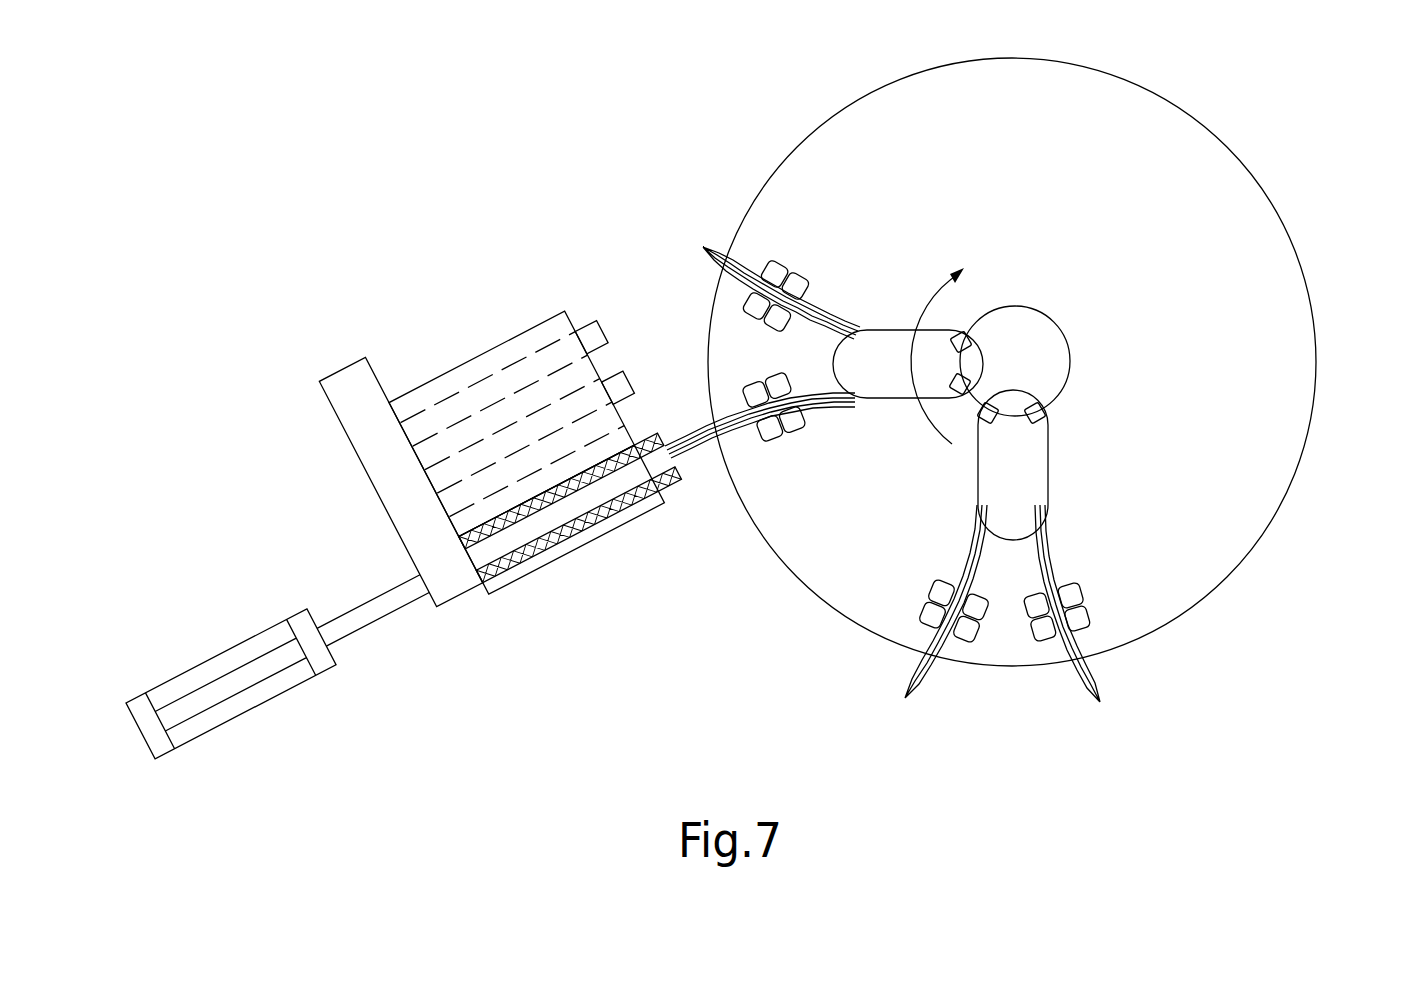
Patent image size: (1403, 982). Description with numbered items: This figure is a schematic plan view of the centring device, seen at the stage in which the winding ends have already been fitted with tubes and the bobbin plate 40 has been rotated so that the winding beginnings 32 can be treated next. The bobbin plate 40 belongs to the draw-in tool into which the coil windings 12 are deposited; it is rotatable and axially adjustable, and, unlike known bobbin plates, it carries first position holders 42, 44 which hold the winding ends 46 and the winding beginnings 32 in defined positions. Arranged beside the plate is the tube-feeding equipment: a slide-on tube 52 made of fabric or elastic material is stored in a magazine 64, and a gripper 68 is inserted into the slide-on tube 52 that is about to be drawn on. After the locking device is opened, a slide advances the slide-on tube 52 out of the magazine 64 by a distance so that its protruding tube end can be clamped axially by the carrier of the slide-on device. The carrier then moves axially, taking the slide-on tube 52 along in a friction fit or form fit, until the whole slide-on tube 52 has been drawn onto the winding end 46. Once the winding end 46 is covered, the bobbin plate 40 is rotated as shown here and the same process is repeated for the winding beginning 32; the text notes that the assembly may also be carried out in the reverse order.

The coil windings 12 is at (1045, 487).
The winding beginning 32 is at (710, 243).
The bobbin plate 40 is at (1290, 412).
The first position holder 42 is at (792, 420).
The first position holder 44 is at (772, 268).
The winding end 46 is at (1088, 697).
The slide-on tube 52 is at (722, 283).
The magazine 64 is at (585, 548).
The gripper 68 is at (532, 525).